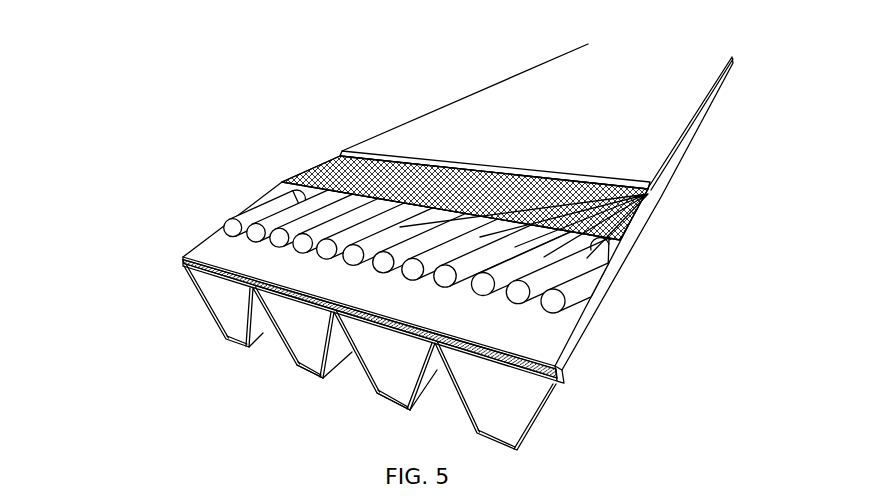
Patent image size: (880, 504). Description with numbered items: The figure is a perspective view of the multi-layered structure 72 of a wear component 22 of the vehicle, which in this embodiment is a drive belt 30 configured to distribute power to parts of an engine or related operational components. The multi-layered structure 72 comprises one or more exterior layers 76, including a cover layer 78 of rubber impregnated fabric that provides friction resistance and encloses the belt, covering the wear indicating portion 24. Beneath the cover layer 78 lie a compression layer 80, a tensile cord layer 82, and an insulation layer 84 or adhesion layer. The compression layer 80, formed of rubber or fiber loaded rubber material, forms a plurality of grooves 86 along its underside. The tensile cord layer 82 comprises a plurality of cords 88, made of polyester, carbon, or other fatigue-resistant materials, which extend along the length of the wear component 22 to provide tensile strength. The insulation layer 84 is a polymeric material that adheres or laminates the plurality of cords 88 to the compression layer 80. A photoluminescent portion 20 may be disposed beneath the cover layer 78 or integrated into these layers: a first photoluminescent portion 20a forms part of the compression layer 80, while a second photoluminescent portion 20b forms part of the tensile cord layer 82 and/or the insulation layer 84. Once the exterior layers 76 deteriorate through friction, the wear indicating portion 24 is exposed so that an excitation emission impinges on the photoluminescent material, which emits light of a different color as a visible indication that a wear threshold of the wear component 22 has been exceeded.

The wear component 22 is at (409, 242).
The multi-layered structure 72 is at (305, 52).
The exterior layers 76 is at (409, 235).
The cover layer 78 is at (447, 118).
The insulation layer 84 is at (355, 172).
The tensile cord layer 82 is at (236, 203).
The photoluminescent portion 20 is at (381, 217).
The first photoluminescent portion 20a is at (381, 235).
The second photoluminescent portion 20b is at (490, 196).
The wear indicating portion 24 is at (381, 260).
The belt 30 is at (692, 92).
The cords 88 is at (652, 194).
The grooves 86 is at (313, 362).
The compression layer 80 is at (413, 370).